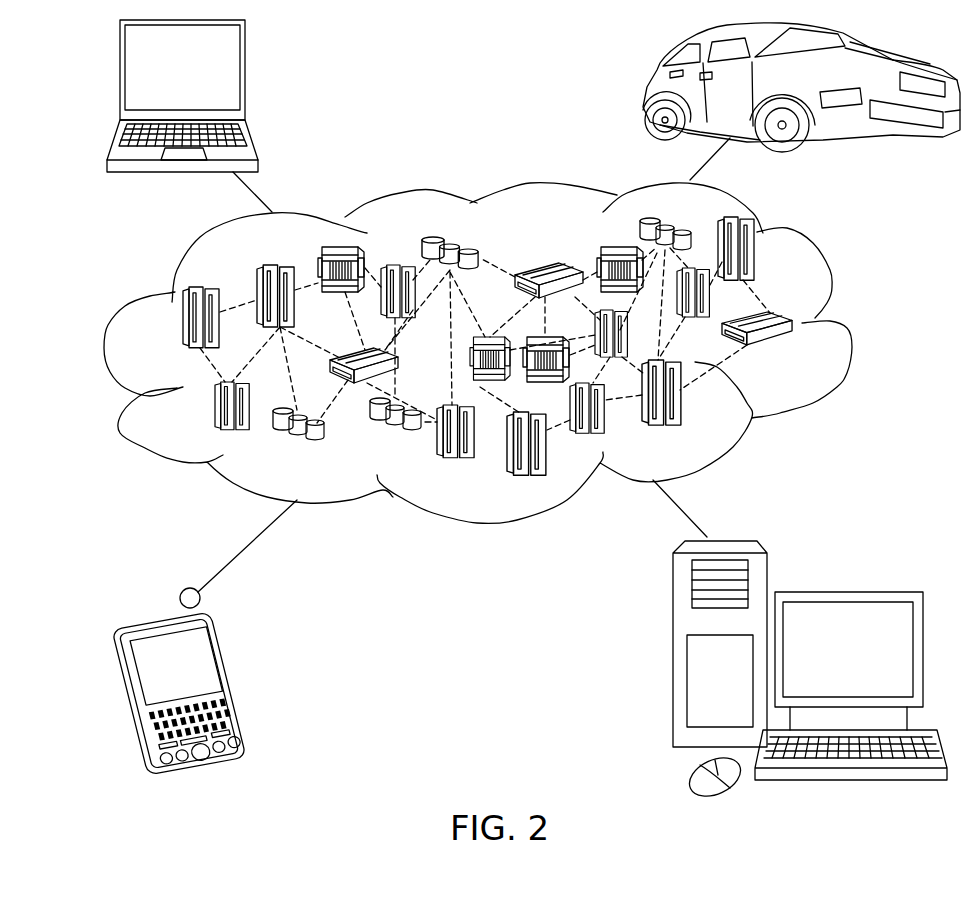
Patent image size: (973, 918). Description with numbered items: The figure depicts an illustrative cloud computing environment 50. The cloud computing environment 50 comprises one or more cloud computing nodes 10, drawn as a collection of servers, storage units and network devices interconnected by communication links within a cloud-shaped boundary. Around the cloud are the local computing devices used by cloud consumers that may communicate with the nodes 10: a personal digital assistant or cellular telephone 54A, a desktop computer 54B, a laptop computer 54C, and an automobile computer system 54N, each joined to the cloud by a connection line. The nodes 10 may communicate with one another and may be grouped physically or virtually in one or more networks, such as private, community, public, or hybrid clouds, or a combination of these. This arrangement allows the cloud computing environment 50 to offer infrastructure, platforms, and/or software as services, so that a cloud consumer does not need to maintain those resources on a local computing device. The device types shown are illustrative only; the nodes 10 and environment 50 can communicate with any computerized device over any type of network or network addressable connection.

The cloud computing node 10 is at (804, 360).
The cloud computing environment 50 is at (846, 323).
The personal digital assistant (PDA) or cellular telephone 54A is at (240, 677).
The desktop computer 54B is at (845, 592).
The laptop computer 54C is at (246, 77).
The automobile computer system 54N is at (647, 90).